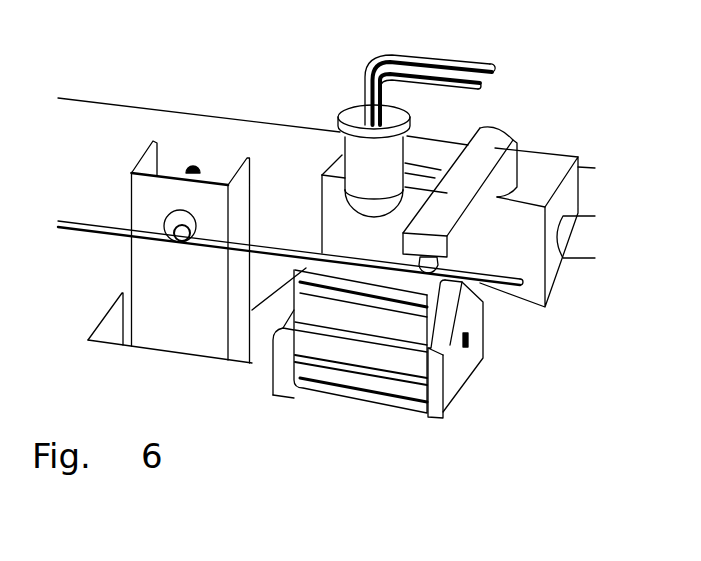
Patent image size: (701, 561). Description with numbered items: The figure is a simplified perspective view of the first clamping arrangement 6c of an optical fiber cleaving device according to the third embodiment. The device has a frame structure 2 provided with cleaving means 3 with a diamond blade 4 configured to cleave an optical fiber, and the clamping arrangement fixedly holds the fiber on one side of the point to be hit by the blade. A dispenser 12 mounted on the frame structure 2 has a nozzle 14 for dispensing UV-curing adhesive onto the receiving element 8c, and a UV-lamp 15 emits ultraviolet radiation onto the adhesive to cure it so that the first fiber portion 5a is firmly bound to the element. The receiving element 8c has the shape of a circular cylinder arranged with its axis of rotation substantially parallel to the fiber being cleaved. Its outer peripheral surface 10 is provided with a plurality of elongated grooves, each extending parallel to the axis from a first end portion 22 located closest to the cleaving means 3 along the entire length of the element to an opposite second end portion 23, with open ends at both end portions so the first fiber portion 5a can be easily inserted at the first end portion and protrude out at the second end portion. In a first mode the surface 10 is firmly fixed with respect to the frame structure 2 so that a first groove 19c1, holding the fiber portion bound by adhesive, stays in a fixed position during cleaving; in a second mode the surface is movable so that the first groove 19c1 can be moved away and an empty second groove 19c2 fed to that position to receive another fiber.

The frame structure 2 is at (113, 102).
The cleaving means 3 is at (253, 193).
The diamond blade 4 is at (167, 220).
The UV-lamp 15 is at (432, 60).
The dispenser 12 is at (500, 128).
The nozzle 14 is at (443, 262).
The first fiber portion 5a is at (500, 285).
The first end portion 22 is at (307, 265).
The first clamping arrangement 6c is at (348, 435).
The first groove 19c1 is at (335, 260).
The surface 10 is at (367, 314).
The second groove 19c2 is at (335, 268).
The receiving element 8c is at (460, 310).
The second end portion 23 is at (437, 315).